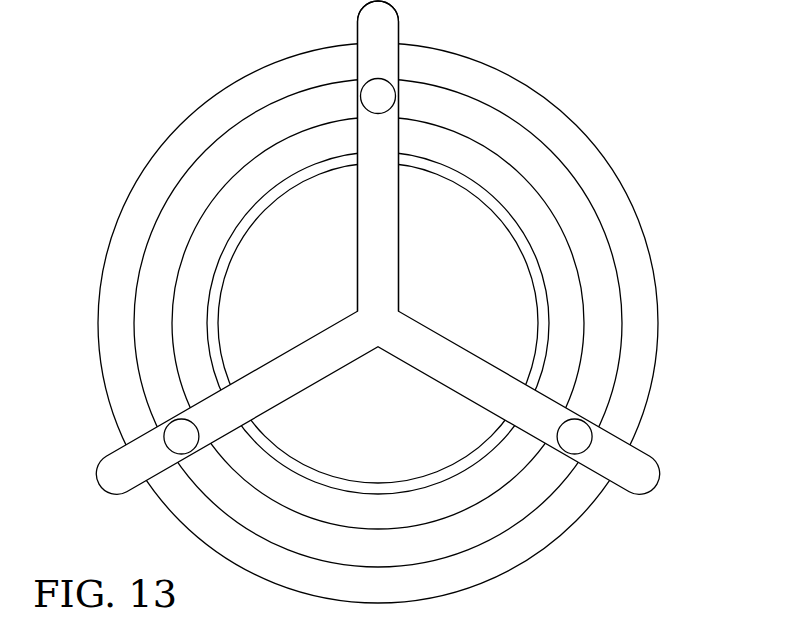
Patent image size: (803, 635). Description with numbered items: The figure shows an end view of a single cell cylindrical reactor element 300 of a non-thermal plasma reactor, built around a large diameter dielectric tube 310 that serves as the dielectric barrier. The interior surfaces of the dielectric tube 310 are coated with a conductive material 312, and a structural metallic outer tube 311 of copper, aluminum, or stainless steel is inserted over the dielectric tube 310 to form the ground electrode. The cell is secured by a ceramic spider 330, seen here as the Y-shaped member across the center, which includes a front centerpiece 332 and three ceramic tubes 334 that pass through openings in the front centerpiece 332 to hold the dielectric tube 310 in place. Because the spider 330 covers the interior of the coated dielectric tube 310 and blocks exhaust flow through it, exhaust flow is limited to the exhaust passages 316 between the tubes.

The single cell cylindrical reactor element 300 is at (411, 303).
The large diameter dielectric tube 310 is at (565, 373).
The structural metallic outer tube 311 is at (608, 208).
The conductive material 312 is at (438, 480).
The exhaust passages 316 is at (604, 338).
The ceramic spider 330 is at (378, 257).
The front centerpiece 332 is at (375, 218).
The ceramic tubes 334 is at (378, 89).